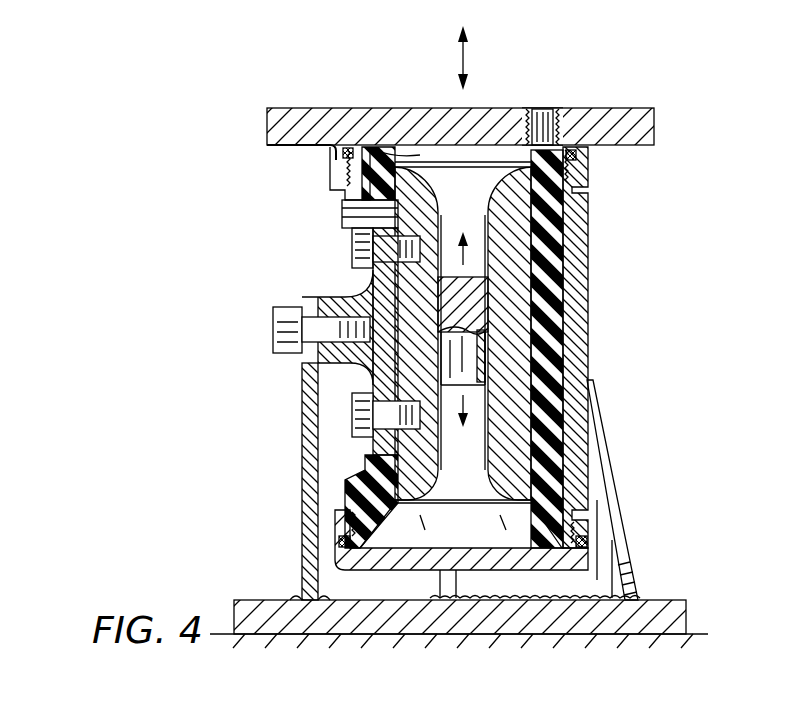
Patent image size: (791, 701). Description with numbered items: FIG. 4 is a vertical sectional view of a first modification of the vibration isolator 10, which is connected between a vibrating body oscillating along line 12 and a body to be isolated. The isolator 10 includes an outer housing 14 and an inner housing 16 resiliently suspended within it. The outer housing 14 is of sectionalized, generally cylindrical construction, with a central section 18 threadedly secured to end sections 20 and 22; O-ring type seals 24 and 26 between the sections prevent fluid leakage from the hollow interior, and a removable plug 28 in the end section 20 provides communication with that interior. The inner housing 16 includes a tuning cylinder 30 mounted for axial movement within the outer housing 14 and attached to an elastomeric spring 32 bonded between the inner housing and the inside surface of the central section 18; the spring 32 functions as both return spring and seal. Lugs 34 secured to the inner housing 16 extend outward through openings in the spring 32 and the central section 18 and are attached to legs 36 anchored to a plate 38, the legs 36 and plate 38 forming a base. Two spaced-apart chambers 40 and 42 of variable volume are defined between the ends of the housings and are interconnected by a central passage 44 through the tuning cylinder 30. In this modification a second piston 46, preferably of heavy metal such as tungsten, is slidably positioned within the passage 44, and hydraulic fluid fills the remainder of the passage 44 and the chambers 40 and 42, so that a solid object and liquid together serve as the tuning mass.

The vibration isolator 10 is at (208, 176).
The line of oscillation 12 is at (472, 60).
The outer housing 14 is at (606, 297).
The inner housing 16 is at (512, 337).
The central section 18 is at (590, 228).
The end section 20 is at (651, 128).
The end section 22 is at (588, 530).
The seal 24 is at (345, 152).
The seal 26 is at (343, 545).
The plug 28 is at (554, 110).
The tuning cylinder 30 is at (428, 212).
The elastomeric spring 32 is at (556, 270).
The lugs 34 is at (326, 297).
The legs 36 is at (302, 455).
The plate 38 is at (684, 604).
The chamber 40 is at (475, 534).
The chamber 42 is at (426, 148).
The central passage 44 is at (480, 467).
The second piston 46 is at (478, 360).